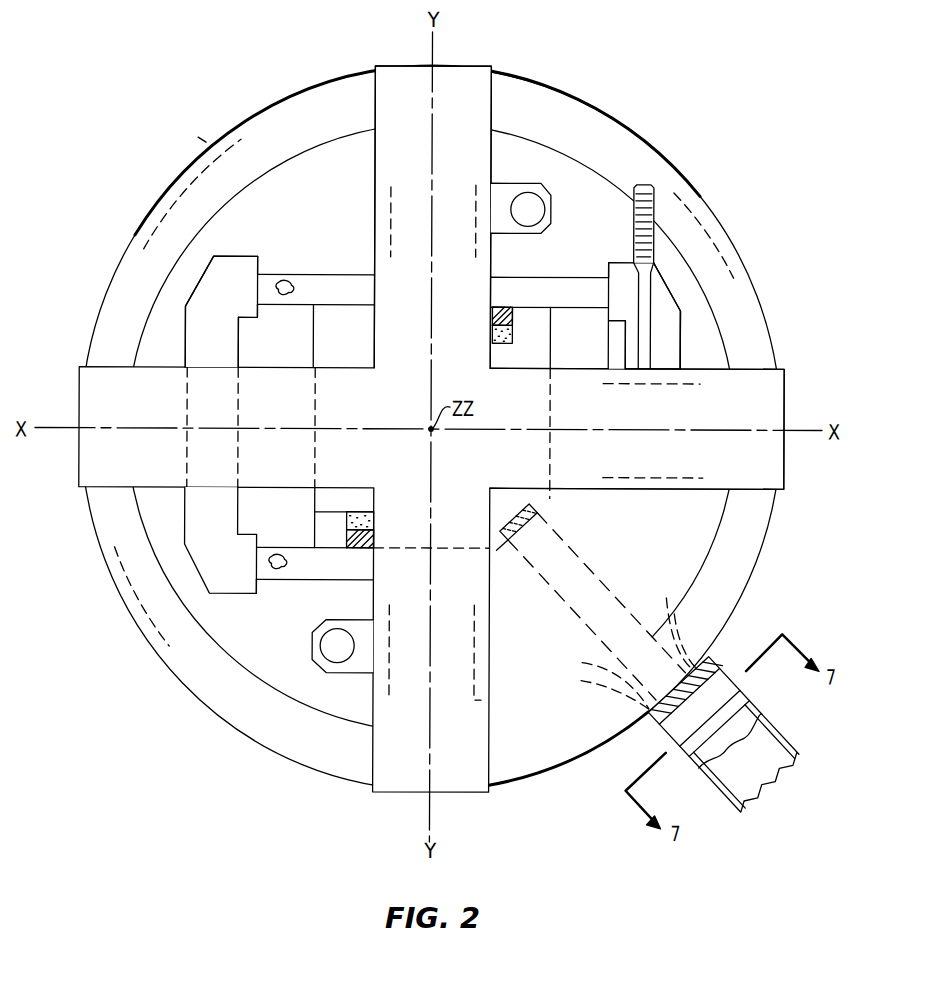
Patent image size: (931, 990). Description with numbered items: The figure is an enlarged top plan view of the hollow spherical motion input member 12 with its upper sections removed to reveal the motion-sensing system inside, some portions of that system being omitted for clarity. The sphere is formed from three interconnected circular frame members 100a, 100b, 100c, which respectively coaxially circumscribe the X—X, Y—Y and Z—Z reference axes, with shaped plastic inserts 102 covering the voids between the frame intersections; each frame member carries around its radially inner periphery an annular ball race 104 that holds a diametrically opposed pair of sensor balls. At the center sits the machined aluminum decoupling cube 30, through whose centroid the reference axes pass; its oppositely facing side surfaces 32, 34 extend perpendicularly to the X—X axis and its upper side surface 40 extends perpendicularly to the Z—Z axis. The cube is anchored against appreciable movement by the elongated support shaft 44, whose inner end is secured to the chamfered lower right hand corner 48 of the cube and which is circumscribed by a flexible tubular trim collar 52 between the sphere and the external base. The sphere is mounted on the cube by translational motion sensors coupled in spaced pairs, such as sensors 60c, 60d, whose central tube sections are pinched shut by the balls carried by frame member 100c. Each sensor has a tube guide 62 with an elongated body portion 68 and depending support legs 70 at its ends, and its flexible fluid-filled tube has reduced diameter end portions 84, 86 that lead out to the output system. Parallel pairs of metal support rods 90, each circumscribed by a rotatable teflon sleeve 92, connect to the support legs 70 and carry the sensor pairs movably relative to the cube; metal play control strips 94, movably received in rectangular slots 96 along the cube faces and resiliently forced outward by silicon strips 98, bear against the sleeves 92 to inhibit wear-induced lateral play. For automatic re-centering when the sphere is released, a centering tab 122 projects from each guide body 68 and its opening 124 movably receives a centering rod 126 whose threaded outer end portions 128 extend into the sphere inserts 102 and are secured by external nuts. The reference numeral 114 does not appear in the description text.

The spherical motion input member 12 is at (768, 540).
The decoupling cube 30 is at (313, 345).
The side surface 32 is at (315, 457).
The side surface 34 is at (552, 468).
The upper side surface 40 is at (347, 344).
The support shaft 44 is at (615, 588).
The chamfered lower right hand corner 48 is at (548, 503).
The flexible tubular trim collar 52 is at (770, 712).
The translational motion sensor 60c is at (178, 352).
The translational motion sensor 60d is at (697, 352).
The tube guide 62 is at (230, 256).
The body portion 68 is at (222, 538).
The support legs 70 is at (258, 263).
The reduced diameter end portion 84 is at (685, 605).
The reduced diameter end portion 86 is at (676, 615).
The support rods 90 is at (286, 282).
The teflon sleeve 92 is at (347, 294).
The play control strips 94 is at (499, 308).
The slots 96 is at (510, 340).
The resilient silicon strips 98 is at (515, 322).
The circular frame member 100a is at (453, 82).
The circular frame member 100b is at (773, 408).
The circular frame member 100c is at (617, 120).
The plastic inserts 102 is at (750, 562).
The annular ball race 104 is at (692, 452).
The rim segment 114 is at (312, 182).
The centering tab 122 is at (497, 183).
The opening 124 is at (541, 210).
The centering rod 126 is at (650, 276).
The threaded outer end portions 128 is at (653, 195).